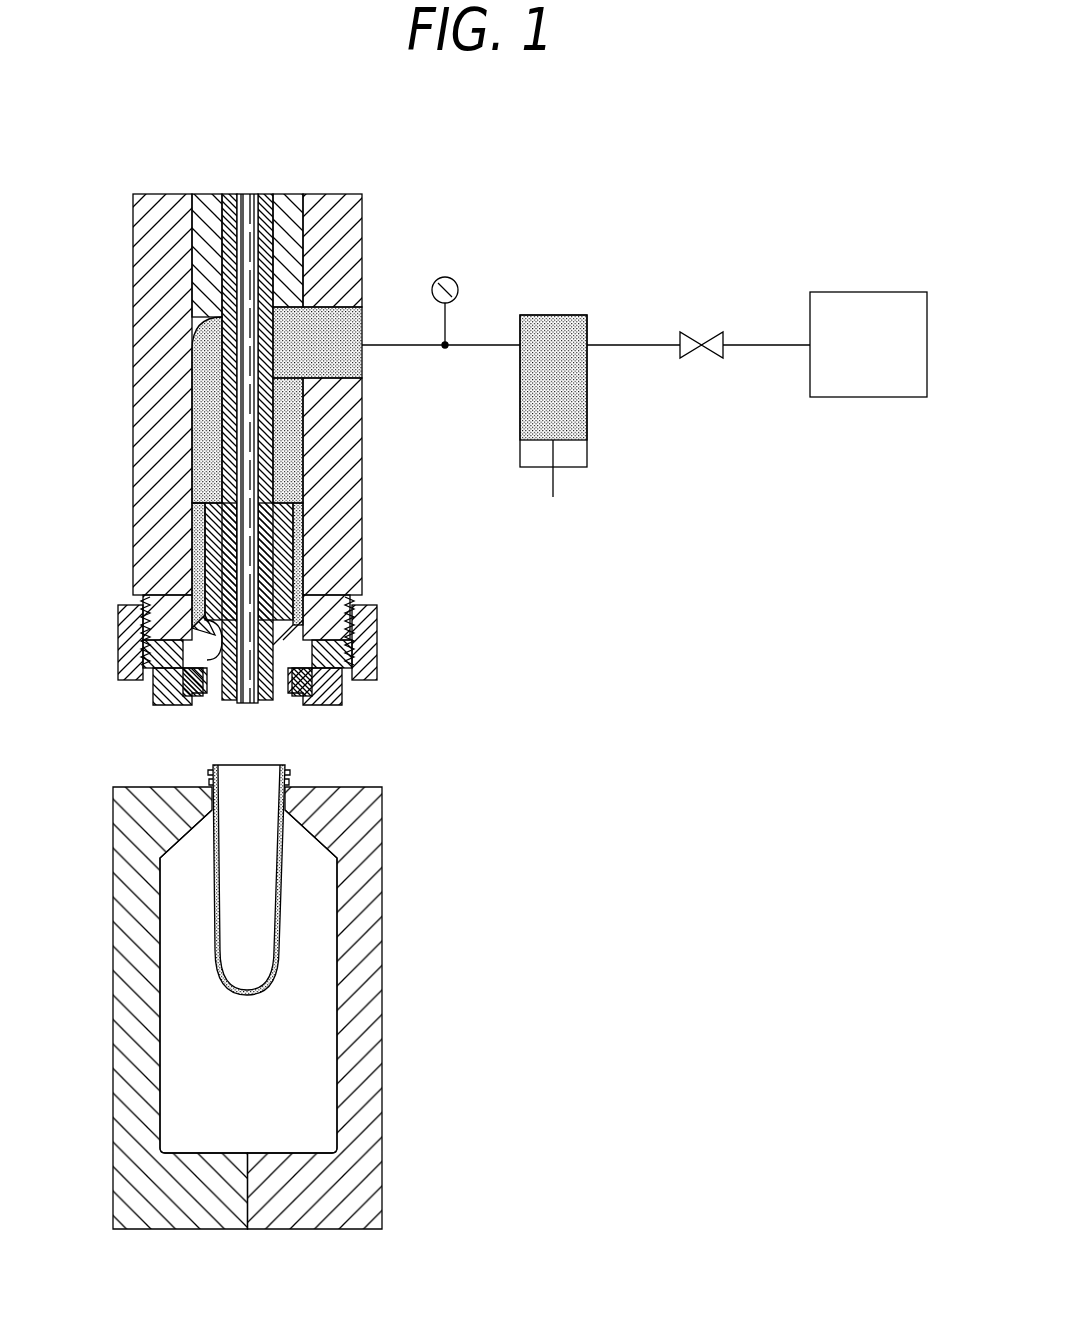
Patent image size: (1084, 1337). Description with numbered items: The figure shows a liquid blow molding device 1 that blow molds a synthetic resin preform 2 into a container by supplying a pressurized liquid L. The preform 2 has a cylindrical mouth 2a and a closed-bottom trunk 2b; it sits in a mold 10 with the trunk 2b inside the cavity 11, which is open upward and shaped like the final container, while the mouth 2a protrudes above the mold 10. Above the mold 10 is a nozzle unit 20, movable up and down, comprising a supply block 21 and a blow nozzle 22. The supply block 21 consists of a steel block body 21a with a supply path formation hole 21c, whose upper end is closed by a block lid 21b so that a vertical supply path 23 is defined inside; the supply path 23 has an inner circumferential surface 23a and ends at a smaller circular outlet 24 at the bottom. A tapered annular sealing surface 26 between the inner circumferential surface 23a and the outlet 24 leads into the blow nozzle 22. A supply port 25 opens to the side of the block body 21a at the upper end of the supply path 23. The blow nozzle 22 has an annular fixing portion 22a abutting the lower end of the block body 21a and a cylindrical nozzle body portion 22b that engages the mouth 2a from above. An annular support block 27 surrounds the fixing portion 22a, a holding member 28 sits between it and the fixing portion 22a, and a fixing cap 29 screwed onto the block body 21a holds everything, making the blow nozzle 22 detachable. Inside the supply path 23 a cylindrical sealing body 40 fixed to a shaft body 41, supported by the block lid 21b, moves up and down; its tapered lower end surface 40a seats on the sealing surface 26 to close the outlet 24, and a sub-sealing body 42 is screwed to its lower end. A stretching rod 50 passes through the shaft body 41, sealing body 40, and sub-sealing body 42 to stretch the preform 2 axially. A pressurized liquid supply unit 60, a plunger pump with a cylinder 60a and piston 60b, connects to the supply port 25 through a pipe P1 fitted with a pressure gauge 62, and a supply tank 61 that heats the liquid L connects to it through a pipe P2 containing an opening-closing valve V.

The liquid blow molding device 1 is at (502, 152).
The preform 2 is at (282, 893).
The mouth 2a is at (287, 765).
The trunk 2b is at (277, 947).
The mold 10 is at (382, 1077).
The cavity 11 is at (322, 1022).
The nozzle unit 20 is at (330, 185).
The supply block 21 is at (362, 252).
The block body 21a is at (350, 493).
The block lid 21b is at (288, 213).
The supply path formation hole 21c is at (197, 230).
The blow nozzle 22 is at (305, 637).
The fixing portion 22a is at (167, 705).
The nozzle body portion 22b is at (215, 697).
The supply path 23 is at (203, 400).
The inner circumferential surface 23a is at (200, 433).
The outlet 24 is at (210, 633).
The supply port 25 is at (353, 358).
The sealing surface 26 is at (300, 628).
The support block 27 is at (345, 702).
The holding member 28 is at (313, 682).
The fixing cap 29 is at (373, 655).
The sealing body 40 is at (290, 540).
The lower end surface 40a is at (210, 640).
The shaft body 41 is at (228, 285).
The sub-sealing body 42 is at (348, 650).
The stretching rod 50 is at (243, 697).
The pressurized liquid supply unit 60 is at (588, 433).
The cylinder 60a is at (588, 388).
The piston 60b is at (567, 442).
The supply tank 61 is at (862, 308).
The pressure gauge 62 is at (433, 293).
The liquid L is at (290, 440).
The pipe P1 is at (482, 345).
The pipe P2 is at (757, 345).
The opening-closing valve V is at (697, 333).